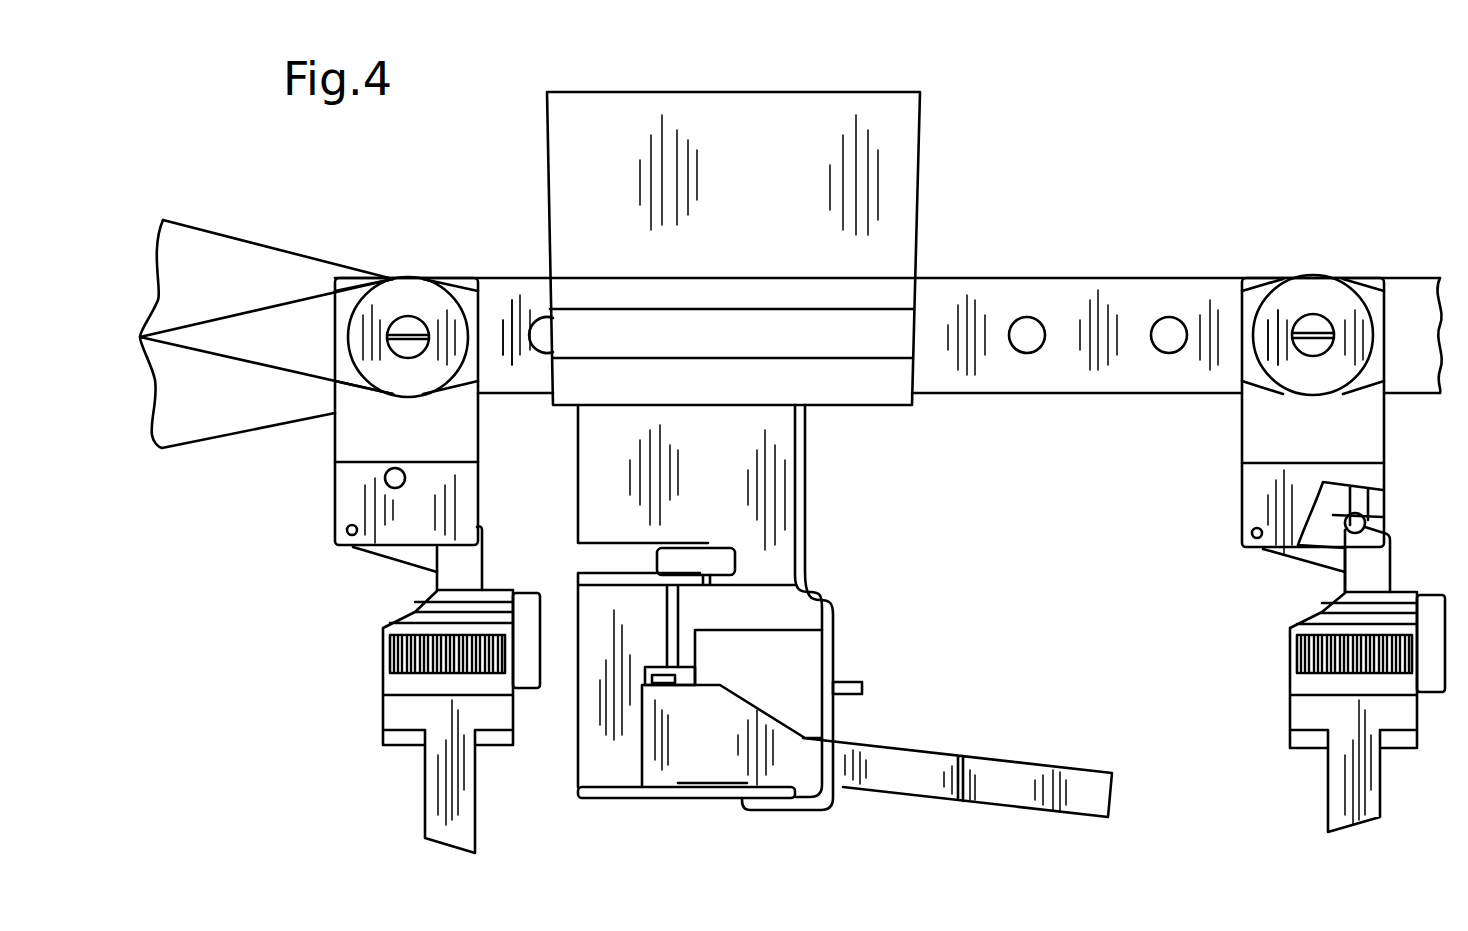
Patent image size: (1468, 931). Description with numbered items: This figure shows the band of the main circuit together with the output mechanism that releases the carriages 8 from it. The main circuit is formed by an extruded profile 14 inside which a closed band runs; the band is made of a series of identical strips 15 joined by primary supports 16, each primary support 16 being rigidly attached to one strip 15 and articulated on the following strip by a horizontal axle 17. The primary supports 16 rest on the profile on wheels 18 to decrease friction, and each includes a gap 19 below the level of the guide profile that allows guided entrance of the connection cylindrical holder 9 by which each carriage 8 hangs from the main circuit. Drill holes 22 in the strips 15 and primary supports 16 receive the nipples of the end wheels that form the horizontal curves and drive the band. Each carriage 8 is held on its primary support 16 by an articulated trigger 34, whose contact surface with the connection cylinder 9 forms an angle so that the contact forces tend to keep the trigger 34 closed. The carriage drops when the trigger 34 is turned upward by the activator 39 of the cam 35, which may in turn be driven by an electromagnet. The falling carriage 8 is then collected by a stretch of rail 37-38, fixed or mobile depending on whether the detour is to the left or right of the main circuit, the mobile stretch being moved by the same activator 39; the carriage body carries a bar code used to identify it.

The carriage 8 is at (415, 712).
The connection cylindrical holder 9 is at (1340, 523).
The extruded profile 14 is at (587, 113).
The strip 15 is at (505, 312).
The primary support 16 is at (362, 492).
The horizontal axle 17 is at (1318, 322).
The wheel 18 is at (1268, 320).
The gap 19 is at (1385, 507).
The drill hole 22 is at (1027, 330).
The articulated trigger 34 is at (425, 560).
The cam 35 is at (716, 561).
The fixed and mobile rail stretches 37-38 is at (1023, 788).
The activator 39 is at (797, 662).